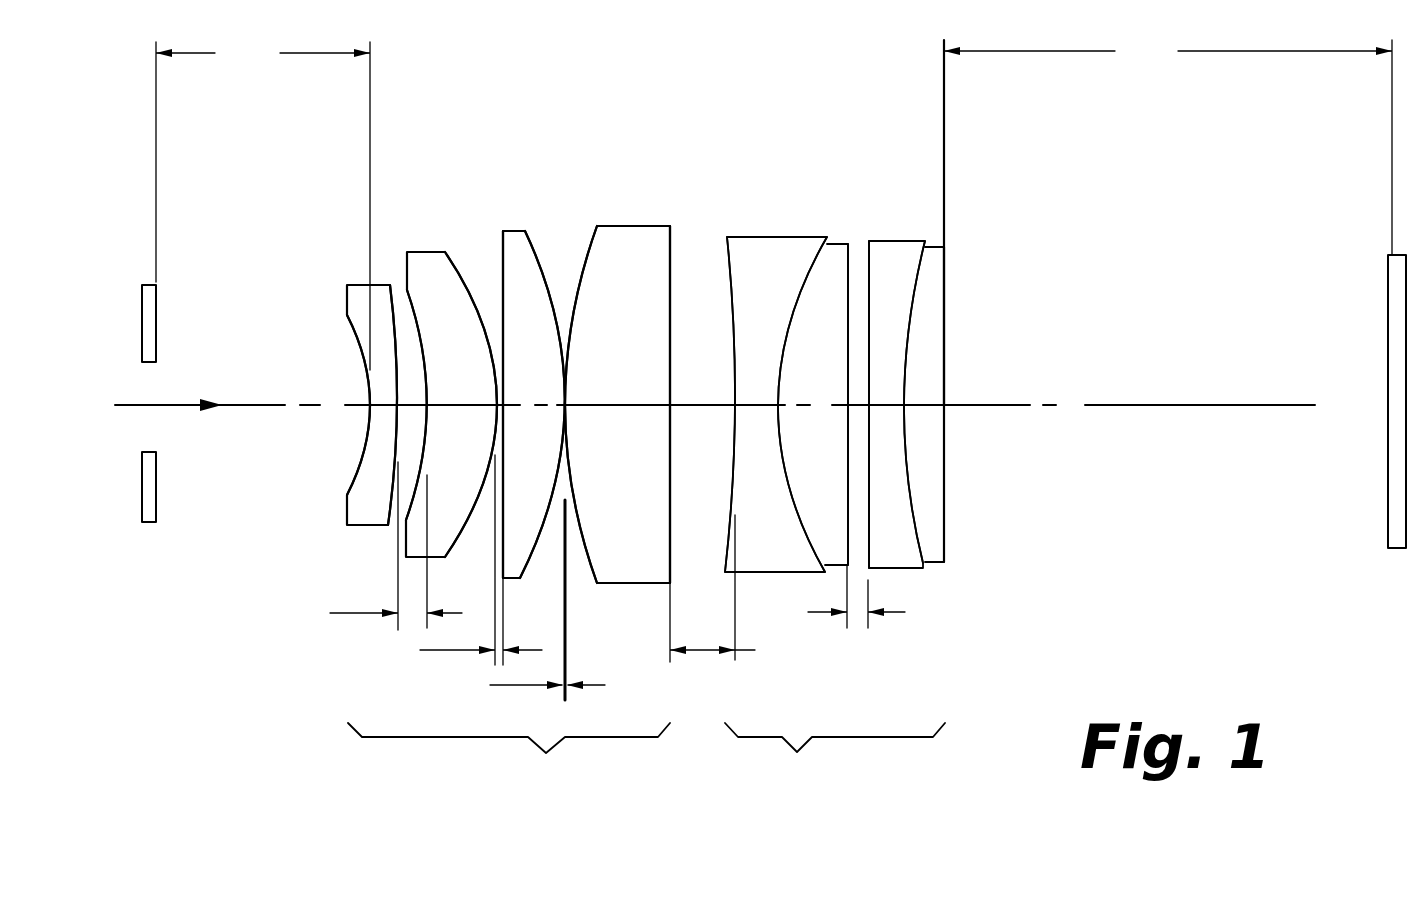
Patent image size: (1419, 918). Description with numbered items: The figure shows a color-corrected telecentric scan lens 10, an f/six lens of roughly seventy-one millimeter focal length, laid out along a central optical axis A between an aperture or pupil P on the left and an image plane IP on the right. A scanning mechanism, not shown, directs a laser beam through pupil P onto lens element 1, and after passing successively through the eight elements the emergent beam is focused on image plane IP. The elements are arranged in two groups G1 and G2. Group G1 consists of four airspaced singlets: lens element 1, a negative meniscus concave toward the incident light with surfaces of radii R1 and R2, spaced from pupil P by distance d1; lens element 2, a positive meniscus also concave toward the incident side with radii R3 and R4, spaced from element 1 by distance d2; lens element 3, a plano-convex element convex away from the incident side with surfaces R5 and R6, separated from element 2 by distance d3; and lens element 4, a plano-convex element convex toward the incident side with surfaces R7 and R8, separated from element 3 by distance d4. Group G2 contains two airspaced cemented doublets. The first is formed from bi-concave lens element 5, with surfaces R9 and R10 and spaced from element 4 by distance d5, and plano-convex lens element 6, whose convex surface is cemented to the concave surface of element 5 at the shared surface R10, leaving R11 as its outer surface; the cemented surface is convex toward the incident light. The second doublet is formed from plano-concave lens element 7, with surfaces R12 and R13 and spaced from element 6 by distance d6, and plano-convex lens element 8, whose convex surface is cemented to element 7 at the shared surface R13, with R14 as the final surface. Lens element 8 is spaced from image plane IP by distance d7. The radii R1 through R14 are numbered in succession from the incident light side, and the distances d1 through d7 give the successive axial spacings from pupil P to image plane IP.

The lens element 1 is at (357, 285).
The lens element 2 is at (432, 252).
The lens element 3 is at (516, 231).
The lens element 4 is at (622, 226).
The lens element 5 is at (760, 237).
The lens element 6 is at (838, 244).
The lens element 7 is at (890, 241).
The lens element 8 is at (932, 247).
The color-corrected telecentric scan lens 10 is at (750, 110).
The surface radius R1 is at (352, 334).
The surface radius R2 is at (400, 418).
The surface radius R3 is at (418, 352).
The surface radius R4 is at (475, 530).
The surface radius R5 is at (497, 264).
The surface radius R6 is at (546, 560).
The surface radius R7 is at (582, 268).
The surface radius R8 is at (672, 508).
The surface radius R9 is at (728, 318).
The cemented surface radius R10 is at (792, 498).
The surface radius R11 is at (850, 325).
The surface radius R12 is at (868, 296).
The cemented surface radius R13 is at (915, 512).
The surface radius R14 is at (947, 328).
The distance d1 is at (263, 205).
The distance d2 is at (375, 547).
The distance d3 is at (459, 563).
The distance d4 is at (525, 603).
The distance d5 is at (731, 593).
The distance d6 is at (873, 600).
The distance d7 is at (1168, 222).
The pupil P is at (157, 302).
The image plane IP is at (1388, 284).
The optical axis A is at (1180, 404).
The first lens group G1 is at (509, 764).
The second lens group G2 is at (835, 764).